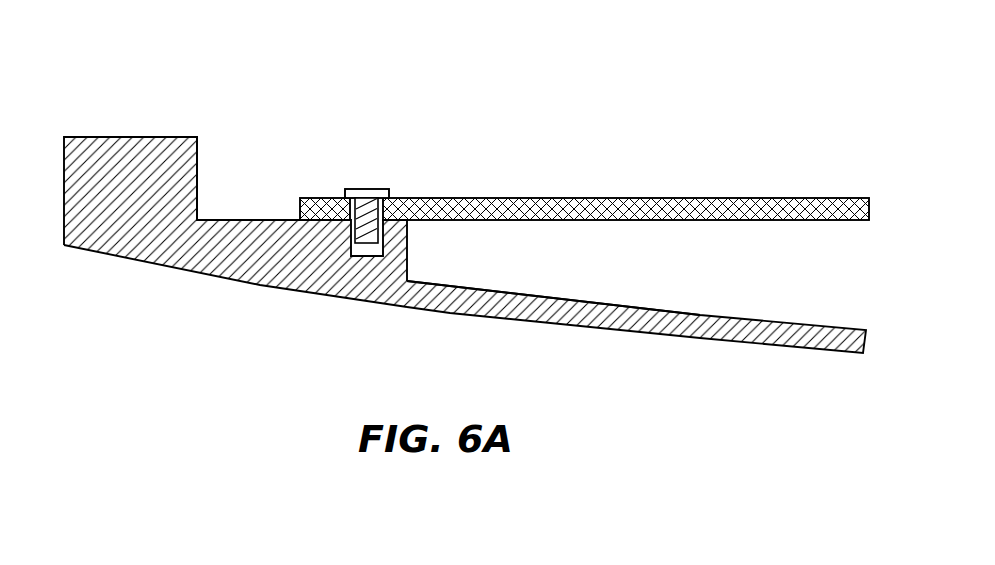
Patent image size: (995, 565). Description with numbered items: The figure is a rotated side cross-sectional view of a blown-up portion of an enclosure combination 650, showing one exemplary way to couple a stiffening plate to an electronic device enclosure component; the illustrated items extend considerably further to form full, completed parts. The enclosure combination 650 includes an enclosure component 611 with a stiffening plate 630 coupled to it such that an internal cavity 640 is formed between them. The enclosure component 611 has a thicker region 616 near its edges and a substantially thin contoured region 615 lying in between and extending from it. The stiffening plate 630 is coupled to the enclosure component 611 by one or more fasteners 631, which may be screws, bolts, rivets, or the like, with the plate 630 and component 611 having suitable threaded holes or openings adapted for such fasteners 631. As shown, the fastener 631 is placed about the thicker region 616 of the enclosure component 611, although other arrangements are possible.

The enclosure combination 650 is at (151, 75).
The enclosure component 611 is at (172, 178).
The thicker region 616 is at (272, 270).
The substantially thin contoured region 615 is at (652, 320).
The stiffening plate 630 is at (671, 197).
The fastener 631 is at (363, 189).
The internal cavity 640 is at (594, 269).